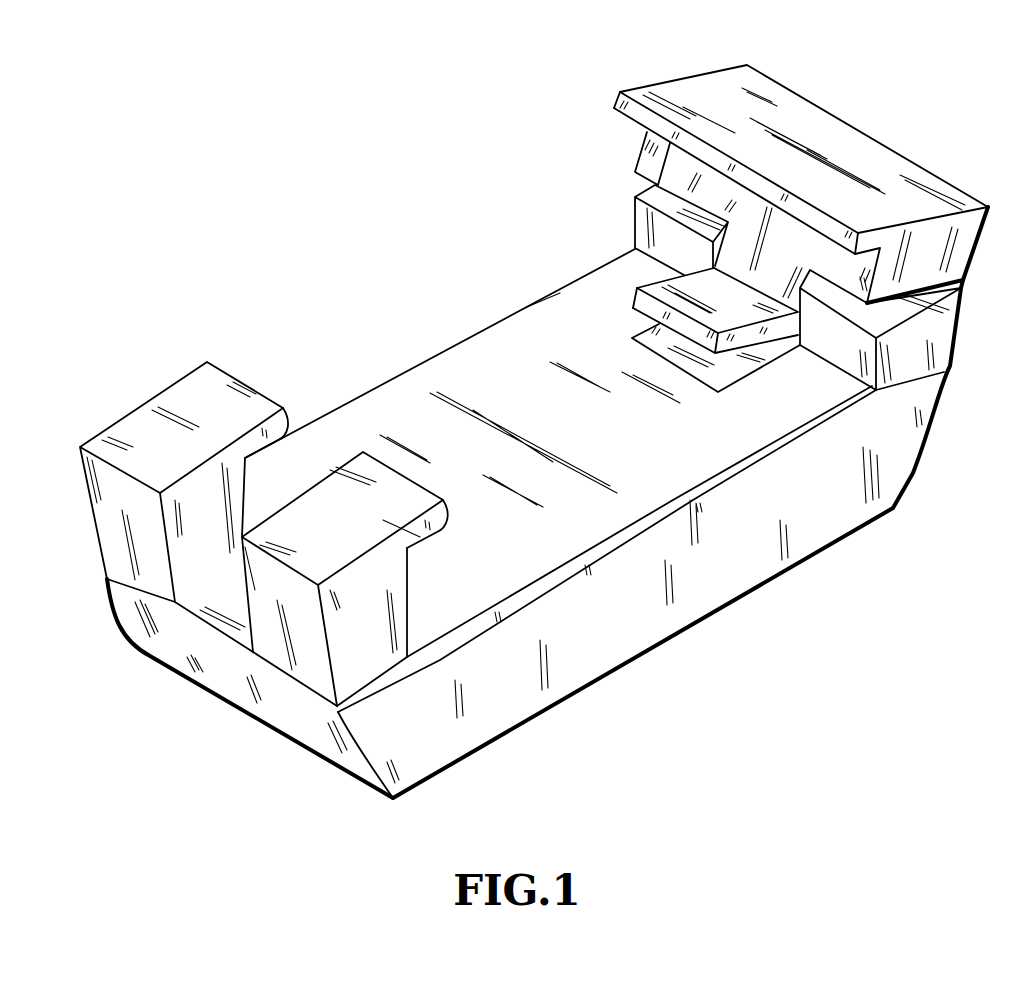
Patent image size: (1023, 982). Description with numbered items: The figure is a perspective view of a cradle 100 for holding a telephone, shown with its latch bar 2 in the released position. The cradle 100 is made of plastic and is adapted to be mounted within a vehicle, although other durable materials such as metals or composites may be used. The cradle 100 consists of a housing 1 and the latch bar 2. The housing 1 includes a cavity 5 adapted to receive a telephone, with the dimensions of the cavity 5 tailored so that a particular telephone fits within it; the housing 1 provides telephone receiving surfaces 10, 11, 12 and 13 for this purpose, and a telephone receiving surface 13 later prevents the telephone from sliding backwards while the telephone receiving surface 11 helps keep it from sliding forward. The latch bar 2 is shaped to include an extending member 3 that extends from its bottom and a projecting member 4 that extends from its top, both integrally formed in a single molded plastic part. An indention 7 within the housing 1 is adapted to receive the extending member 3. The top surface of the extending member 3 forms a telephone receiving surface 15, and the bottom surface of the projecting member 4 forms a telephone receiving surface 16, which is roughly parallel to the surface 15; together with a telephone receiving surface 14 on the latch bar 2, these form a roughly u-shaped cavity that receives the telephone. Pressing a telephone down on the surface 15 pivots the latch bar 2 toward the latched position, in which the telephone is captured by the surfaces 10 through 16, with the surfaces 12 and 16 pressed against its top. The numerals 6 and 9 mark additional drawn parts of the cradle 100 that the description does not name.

The cradle 100 is at (406, 178).
The housing 1 is at (619, 635).
The latch bar 2 is at (931, 271).
The extending member 3 is at (720, 305).
The projecting member 4 is at (632, 92).
The cavity 5 is at (443, 307).
The clamp block 6 is at (194, 378).
The indention 7 is at (723, 370).
The top plate 9 is at (851, 136).
The telephone receiving surface 10 is at (406, 395).
The telephone receiving surface 11 is at (838, 348).
The telephone receiving surface 12 is at (277, 444).
The telephone receiving surface 13 is at (412, 590).
The telephone receiving surface 14 is at (737, 239).
The telephone receiving surface 15 is at (657, 290).
The telephone receiving surface 16 is at (626, 122).